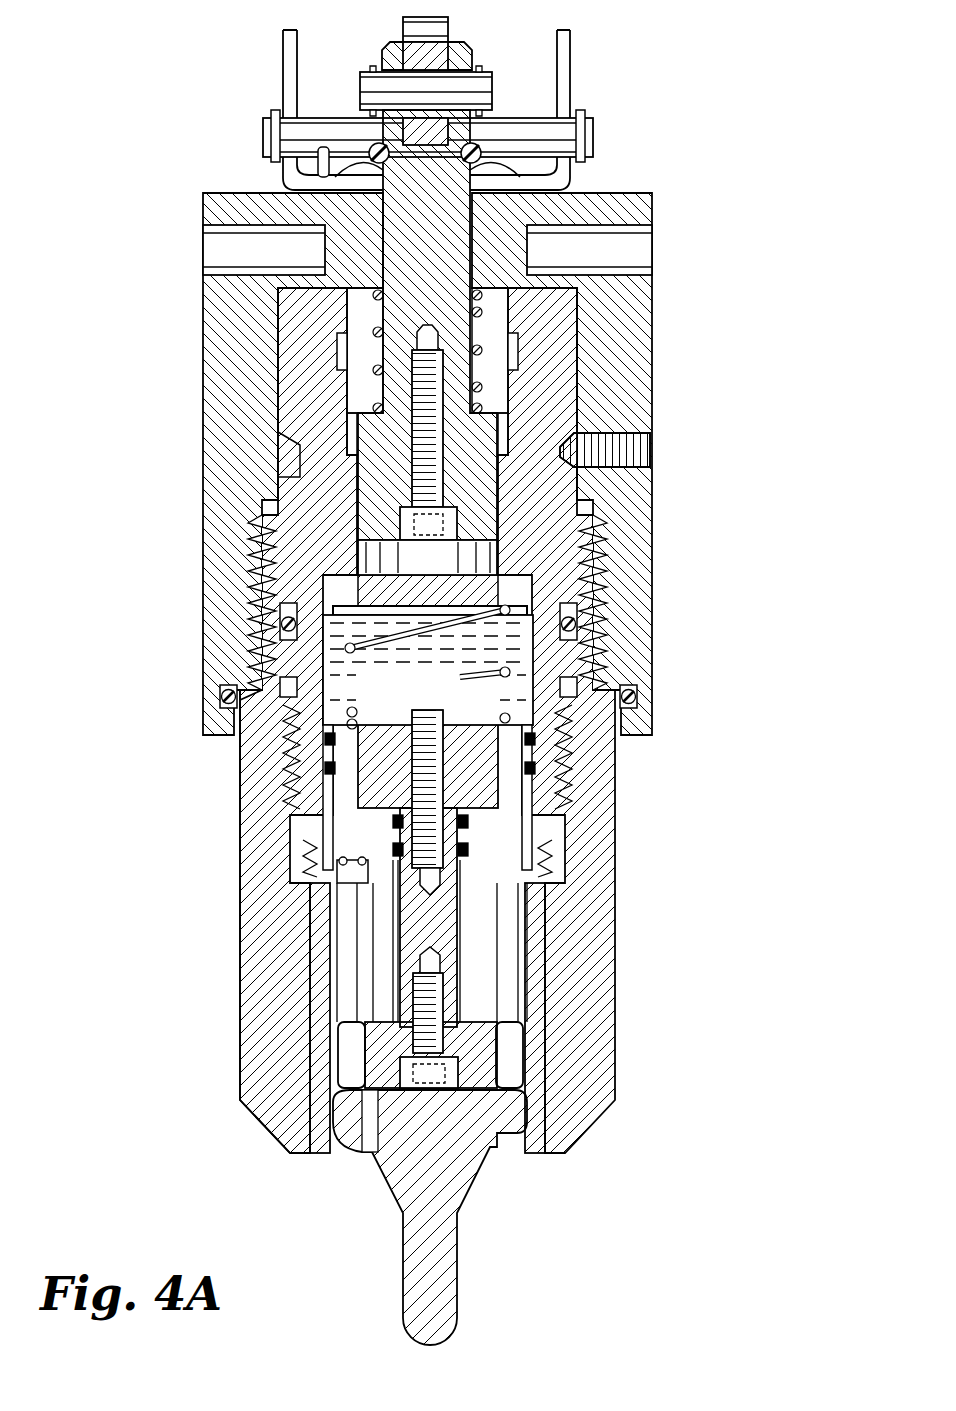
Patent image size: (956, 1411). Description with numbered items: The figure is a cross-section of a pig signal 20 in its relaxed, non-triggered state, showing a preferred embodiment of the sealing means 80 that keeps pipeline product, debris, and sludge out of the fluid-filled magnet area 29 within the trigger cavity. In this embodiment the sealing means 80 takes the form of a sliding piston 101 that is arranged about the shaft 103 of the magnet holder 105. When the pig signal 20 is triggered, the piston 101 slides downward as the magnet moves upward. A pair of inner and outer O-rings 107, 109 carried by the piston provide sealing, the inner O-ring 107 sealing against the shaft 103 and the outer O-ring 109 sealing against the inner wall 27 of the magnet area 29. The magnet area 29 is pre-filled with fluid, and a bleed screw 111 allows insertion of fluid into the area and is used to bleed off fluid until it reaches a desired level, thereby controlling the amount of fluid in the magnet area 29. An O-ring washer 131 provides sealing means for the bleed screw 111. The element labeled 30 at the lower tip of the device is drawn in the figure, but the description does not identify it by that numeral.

The pig signal 20 is at (675, 335).
The inner wall 27 is at (337, 670).
The magnet area 29 is at (427, 557).
The valve tip 30 is at (440, 1275).
The sealing means 80 is at (307, 754).
The sliding piston 101 is at (347, 798).
The shaft 103 is at (410, 920).
The magnet holder 105 is at (463, 957).
The inner O-ring 107 is at (470, 832).
The outer O-ring 109 is at (535, 738).
The bleed screw 111 is at (357, 880).
The O-ring washer 131 is at (337, 877).